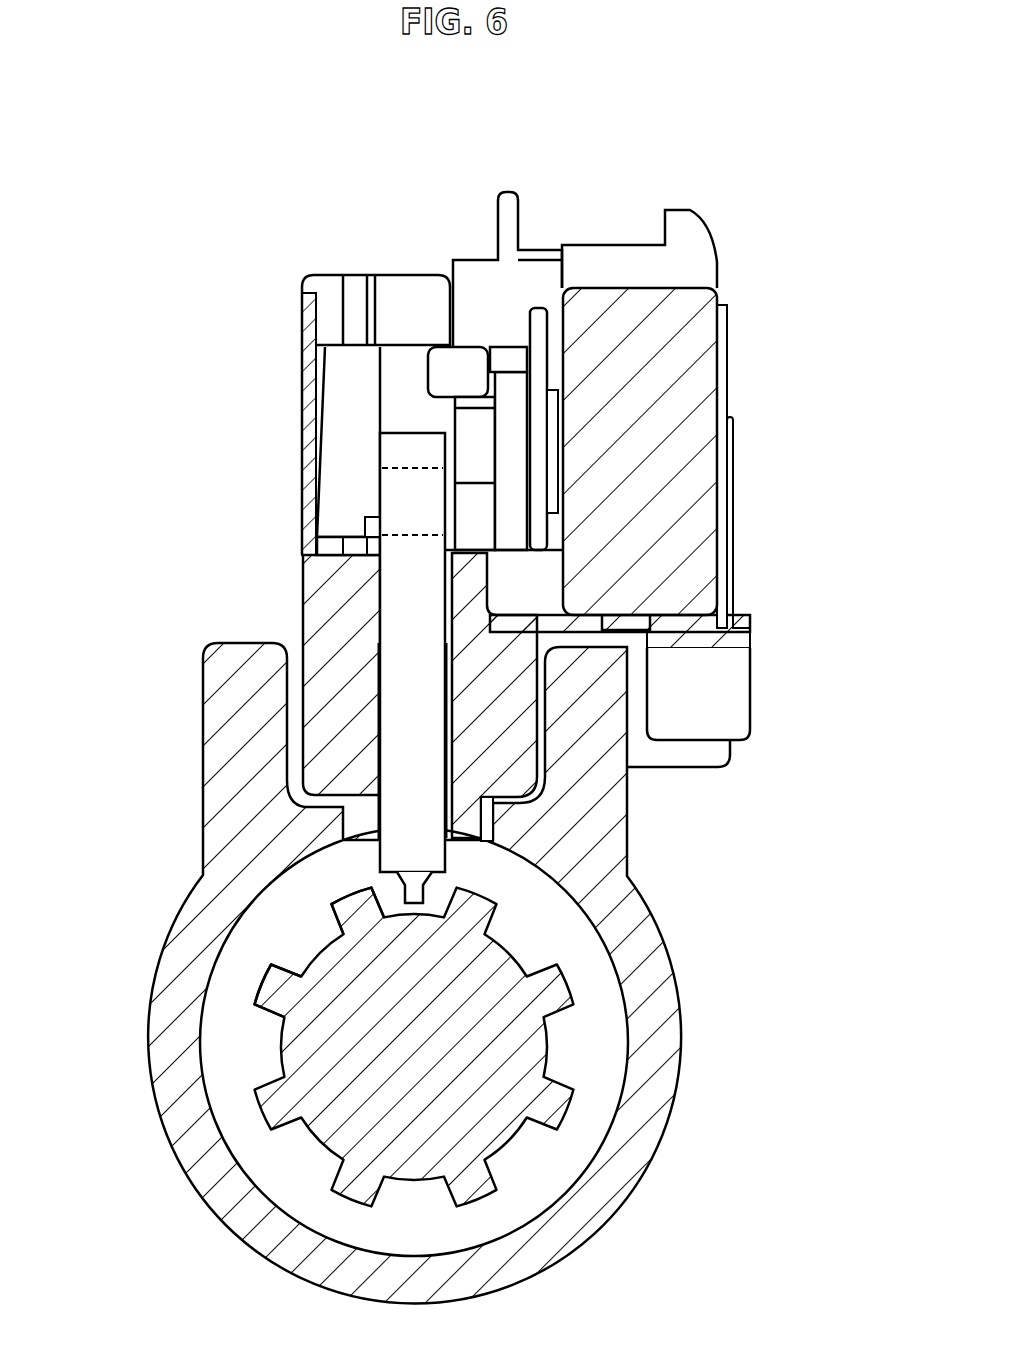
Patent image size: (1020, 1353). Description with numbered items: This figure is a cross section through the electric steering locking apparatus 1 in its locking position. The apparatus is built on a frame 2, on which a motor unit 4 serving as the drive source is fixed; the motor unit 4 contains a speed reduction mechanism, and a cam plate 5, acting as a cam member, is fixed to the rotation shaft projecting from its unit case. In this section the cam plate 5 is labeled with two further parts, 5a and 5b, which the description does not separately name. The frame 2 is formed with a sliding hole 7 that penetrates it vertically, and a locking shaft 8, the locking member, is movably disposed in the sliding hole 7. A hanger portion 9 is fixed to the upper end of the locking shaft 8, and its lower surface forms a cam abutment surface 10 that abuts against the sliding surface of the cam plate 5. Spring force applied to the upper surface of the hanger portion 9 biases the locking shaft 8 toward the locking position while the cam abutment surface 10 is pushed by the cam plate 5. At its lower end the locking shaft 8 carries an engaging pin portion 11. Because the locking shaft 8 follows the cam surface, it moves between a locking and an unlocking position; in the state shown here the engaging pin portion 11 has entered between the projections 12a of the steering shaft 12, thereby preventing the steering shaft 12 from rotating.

The electric steering locking apparatus 1 is at (288, 252).
The frame 2 is at (325, 750).
The motor unit 4 is at (633, 300).
The cam plate 5 is at (840, 436).
The magnetic detection element 5a is at (510, 430).
The sensor substrate 5b is at (537, 467).
The sliding hole 7 is at (395, 690).
The locking shaft 8 is at (395, 578).
The hanger portion 9 is at (340, 414).
The cam abutment surface 10 is at (512, 378).
The engaging pin portion 11 is at (437, 890).
The steering shaft 12 is at (533, 1050).
The projections 12a is at (347, 888).